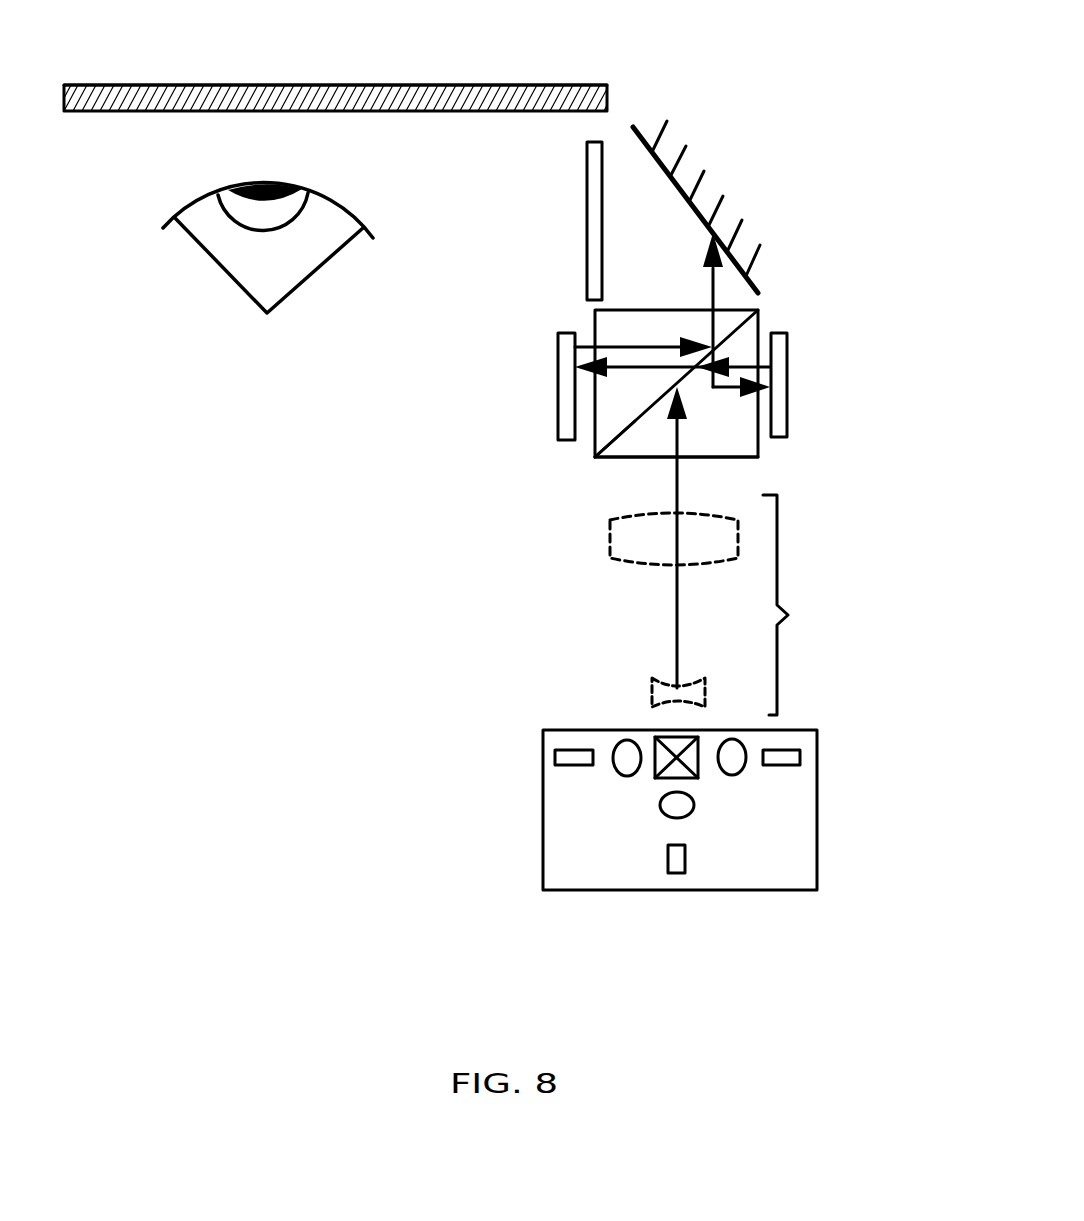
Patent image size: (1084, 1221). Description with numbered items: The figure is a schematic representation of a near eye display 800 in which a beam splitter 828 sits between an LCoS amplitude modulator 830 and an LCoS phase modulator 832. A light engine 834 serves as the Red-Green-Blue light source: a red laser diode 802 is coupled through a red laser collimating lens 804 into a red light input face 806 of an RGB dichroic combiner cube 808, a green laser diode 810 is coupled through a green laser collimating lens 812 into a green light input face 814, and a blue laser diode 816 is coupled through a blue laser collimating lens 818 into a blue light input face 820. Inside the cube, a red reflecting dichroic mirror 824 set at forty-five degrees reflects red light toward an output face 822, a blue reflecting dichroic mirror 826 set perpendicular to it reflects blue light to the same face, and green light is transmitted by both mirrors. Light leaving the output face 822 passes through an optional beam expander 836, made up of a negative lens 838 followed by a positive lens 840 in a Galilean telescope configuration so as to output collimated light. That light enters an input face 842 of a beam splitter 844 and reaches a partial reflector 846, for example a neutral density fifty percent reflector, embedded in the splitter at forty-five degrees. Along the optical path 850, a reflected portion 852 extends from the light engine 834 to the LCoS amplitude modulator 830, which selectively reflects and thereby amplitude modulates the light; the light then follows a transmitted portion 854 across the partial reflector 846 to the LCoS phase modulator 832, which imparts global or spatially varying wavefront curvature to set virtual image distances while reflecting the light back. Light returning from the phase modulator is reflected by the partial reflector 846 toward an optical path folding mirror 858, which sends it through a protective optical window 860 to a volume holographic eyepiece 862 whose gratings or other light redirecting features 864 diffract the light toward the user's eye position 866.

The near eye display 800 is at (373, 43).
The red laser diode 802 is at (556, 752).
The red laser collimating lens 804 is at (613, 770).
The red light input face 806 is at (645, 779).
The RGB dichroic combiner cube 808 is at (706, 774).
The green laser diode 810 is at (668, 863).
The green laser collimating lens 812 is at (697, 787).
The green light input face 814 is at (697, 787).
The blue laser diode 816 is at (800, 750).
The blue laser collimating lens 818 is at (747, 748).
The blue light input face 820 is at (706, 773).
The output face 822 is at (657, 752).
The red reflecting dichroic mirror 824 is at (680, 743).
The blue reflecting dichroic mirror 826 is at (655, 740).
The beam splitter 828 is at (595, 457).
The LCoS amplitude modulator 830 is at (787, 358).
The LCoS phase modulator 832 is at (558, 436).
The light engine 834 is at (818, 833).
The beam expander 836 is at (806, 605).
The negative lens 838 is at (655, 727).
The positive lens 840 is at (612, 557).
The input face 842 is at (740, 470).
The beam splitter 844 is at (595, 333).
The partial reflector 846 is at (628, 427).
The optical path 850 is at (680, 605).
The reflected portion 852 is at (698, 465).
The transmitted portion 854 is at (732, 360).
The optical path folding mirror 858 is at (670, 163).
The protective optical window 860 is at (587, 227).
The volume holographic eyepiece 862 is at (520, 85).
The light redirecting features 864 is at (146, 85).
The user's eye position 866 is at (208, 210).